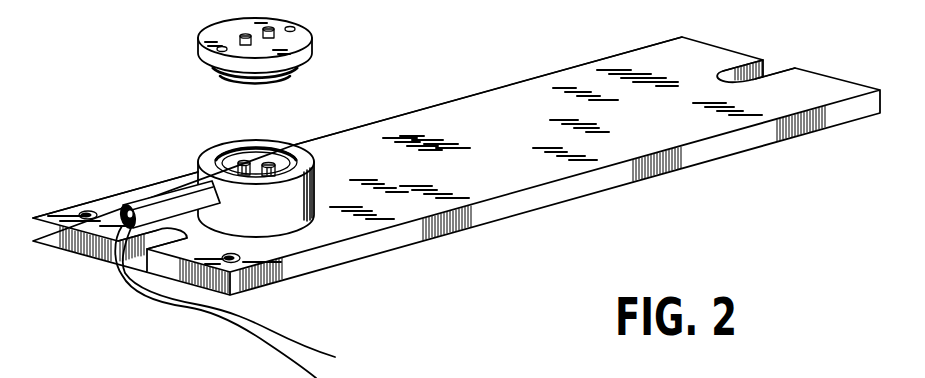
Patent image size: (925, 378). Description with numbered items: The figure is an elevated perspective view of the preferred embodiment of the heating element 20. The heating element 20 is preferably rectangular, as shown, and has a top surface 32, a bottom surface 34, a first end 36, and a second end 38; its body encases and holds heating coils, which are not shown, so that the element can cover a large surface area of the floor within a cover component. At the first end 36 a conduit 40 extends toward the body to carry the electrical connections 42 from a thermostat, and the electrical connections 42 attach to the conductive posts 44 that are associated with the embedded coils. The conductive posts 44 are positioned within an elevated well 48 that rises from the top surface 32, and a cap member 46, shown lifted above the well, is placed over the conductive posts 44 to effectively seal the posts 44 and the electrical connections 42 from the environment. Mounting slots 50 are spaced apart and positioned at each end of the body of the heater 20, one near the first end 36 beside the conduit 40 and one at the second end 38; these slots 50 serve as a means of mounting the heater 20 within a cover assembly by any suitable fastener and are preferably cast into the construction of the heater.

The heating element 20 is at (462, 122).
The top surface 32 is at (547, 100).
The bottom surface 34 is at (398, 252).
The first end 36 is at (290, 247).
The second end 38 is at (800, 92).
The conduit 40 is at (162, 206).
The electrical connections 42 is at (213, 312).
The conductive posts 44 is at (267, 166).
The cap member 46 is at (297, 38).
The elevated well 48 is at (283, 215).
The mounting slots 50 is at (118, 252).